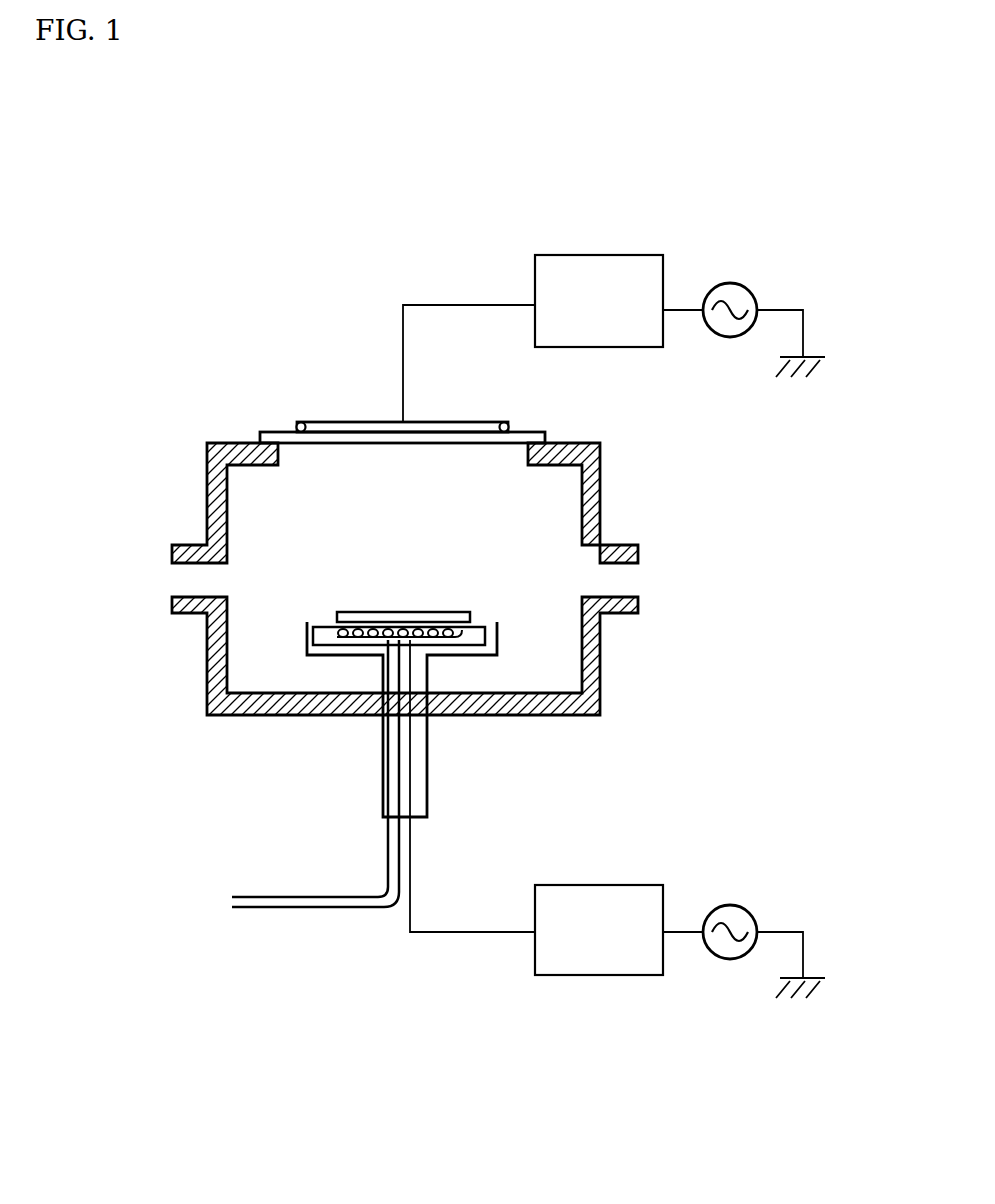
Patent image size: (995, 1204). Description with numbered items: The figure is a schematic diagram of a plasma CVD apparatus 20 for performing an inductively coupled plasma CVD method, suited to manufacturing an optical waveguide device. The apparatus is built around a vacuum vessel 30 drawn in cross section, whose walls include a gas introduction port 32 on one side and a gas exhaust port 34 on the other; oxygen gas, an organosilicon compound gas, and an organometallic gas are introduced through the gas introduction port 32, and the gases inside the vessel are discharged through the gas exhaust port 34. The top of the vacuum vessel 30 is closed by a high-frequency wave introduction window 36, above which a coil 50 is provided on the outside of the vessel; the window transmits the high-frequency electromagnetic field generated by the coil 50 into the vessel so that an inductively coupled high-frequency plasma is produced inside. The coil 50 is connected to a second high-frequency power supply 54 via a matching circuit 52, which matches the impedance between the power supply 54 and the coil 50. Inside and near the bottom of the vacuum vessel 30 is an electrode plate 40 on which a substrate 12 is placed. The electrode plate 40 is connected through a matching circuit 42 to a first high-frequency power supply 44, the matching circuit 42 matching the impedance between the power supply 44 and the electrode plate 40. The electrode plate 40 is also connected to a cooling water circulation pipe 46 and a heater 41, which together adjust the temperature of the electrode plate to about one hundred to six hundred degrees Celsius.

The plasma CVD apparatus 20 is at (782, 503).
The vacuum vessel 30 is at (207, 476).
The gas introduction port 32 is at (197, 581).
The gas exhaust port 34 is at (620, 583).
The high-frequency wave introduction window 36 is at (527, 432).
The coil 50 is at (337, 422).
The matching circuit 52 is at (600, 255).
The second high-frequency power supply 54 is at (733, 283).
The substrate 12 is at (447, 612).
The electrode plate 40 is at (475, 640).
The heater 41 is at (335, 650).
The cooling water circulation pipe 46 is at (293, 897).
The matching circuit 42 is at (625, 975).
The first high-frequency power supply 44 is at (730, 959).